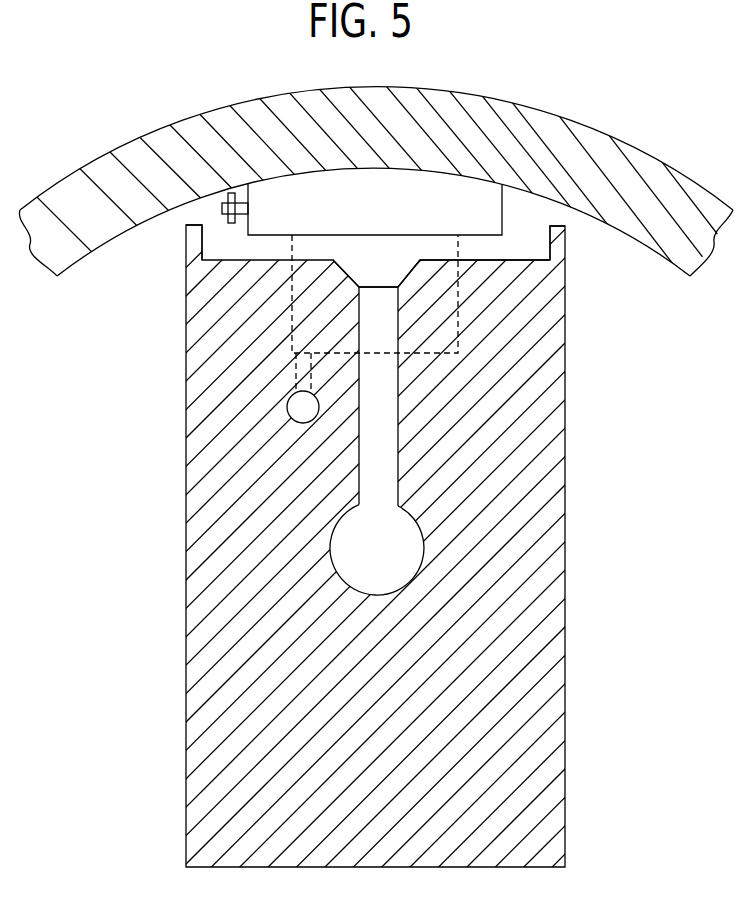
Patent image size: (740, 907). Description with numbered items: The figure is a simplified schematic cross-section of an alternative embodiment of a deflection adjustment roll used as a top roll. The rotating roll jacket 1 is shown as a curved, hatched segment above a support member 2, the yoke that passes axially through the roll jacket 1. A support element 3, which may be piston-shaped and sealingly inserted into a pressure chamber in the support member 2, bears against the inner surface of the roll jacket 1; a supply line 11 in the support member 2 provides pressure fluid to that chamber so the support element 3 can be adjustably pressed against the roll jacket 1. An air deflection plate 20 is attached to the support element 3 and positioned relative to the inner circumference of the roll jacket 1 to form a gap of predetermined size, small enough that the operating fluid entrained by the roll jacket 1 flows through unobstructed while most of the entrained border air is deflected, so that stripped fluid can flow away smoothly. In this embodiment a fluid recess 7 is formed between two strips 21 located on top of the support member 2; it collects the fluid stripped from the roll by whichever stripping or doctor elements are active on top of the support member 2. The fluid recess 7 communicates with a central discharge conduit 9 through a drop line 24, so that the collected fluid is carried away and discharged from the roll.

The roll jacket 1 is at (95, 190).
The support member 2 is at (532, 757).
The support element 3 is at (467, 190).
The fluid recess 7 is at (517, 247).
The central discharge conduit 9 is at (393, 552).
The supply line 11 is at (298, 410).
The air deflection plate 20 is at (231, 192).
The strip 21 is at (193, 240).
The drop line 24 is at (383, 420).